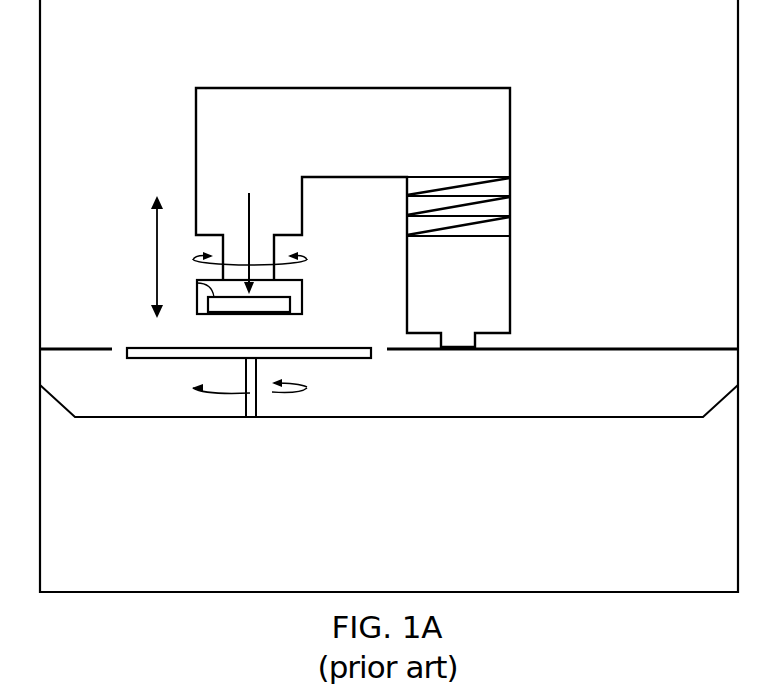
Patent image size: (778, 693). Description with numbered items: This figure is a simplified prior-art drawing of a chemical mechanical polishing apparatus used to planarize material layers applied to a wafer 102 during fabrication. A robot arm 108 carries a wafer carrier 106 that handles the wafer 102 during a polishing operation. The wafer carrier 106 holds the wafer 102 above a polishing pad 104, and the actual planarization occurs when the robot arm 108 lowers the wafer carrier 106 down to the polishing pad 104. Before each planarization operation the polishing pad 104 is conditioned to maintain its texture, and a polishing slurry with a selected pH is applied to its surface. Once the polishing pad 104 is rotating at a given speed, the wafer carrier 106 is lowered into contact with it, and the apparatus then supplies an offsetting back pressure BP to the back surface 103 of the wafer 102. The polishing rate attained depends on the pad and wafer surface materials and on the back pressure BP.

The robot arm 108 is at (240, 96).
The back pressure BP is at (250, 200).
The wafer carrier 106 is at (300, 278).
The wafer 102 is at (260, 316).
The back surface 103 is at (197, 283).
The polishing pad 104 is at (330, 359).